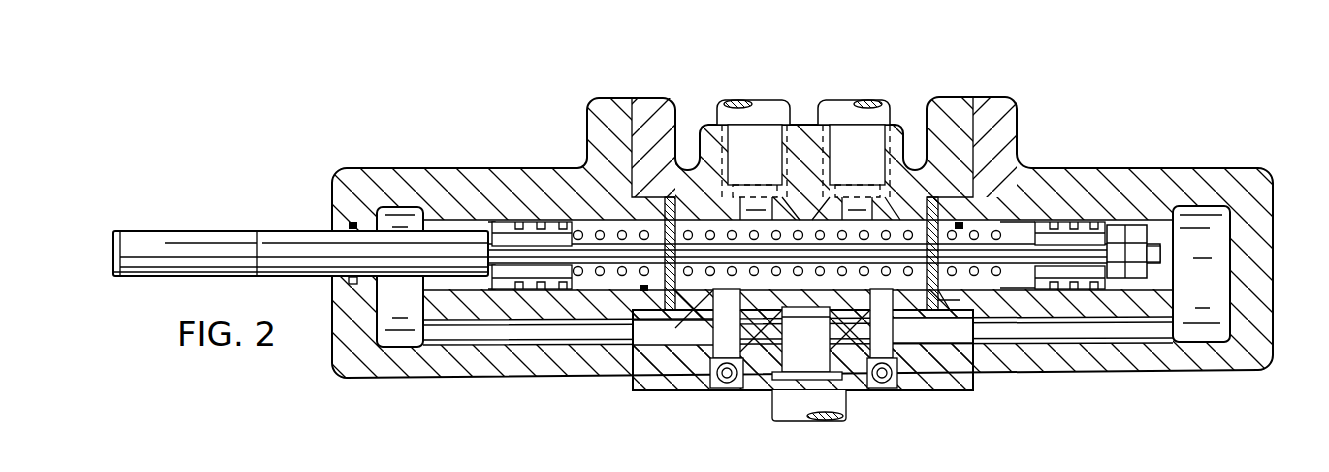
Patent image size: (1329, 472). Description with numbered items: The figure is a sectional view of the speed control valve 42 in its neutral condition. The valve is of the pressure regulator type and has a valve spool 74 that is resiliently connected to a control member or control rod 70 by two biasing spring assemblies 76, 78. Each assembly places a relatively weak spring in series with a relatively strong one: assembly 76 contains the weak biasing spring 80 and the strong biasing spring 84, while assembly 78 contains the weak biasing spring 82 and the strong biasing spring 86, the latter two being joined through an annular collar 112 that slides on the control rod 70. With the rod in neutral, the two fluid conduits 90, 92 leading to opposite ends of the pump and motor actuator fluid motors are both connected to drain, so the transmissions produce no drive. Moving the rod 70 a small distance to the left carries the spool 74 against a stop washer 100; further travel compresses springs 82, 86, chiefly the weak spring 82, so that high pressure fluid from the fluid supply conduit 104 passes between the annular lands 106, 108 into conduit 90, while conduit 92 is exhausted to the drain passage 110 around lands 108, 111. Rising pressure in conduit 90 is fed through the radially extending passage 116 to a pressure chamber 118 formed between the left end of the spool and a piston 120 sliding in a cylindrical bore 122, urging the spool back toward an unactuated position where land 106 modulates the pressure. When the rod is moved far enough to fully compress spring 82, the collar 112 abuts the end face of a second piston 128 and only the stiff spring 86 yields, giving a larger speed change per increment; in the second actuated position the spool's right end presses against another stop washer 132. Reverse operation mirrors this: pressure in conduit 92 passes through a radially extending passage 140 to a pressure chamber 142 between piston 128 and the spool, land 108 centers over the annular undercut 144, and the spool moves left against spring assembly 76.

The speed control valve 42 is at (1224, 120).
The control rod 70 is at (278, 231).
The valve spool 74 is at (960, 178).
The biasing spring assembly 76 is at (580, 215).
The biasing spring assembly 78 is at (1025, 215).
The biasing spring 80 is at (560, 286).
The biasing spring 82 is at (1098, 284).
The biasing spring 84 is at (635, 288).
The biasing spring 86 is at (878, 330).
The fluid conduit 90 is at (756, 103).
The fluid conduit 92 is at (864, 102).
The stop washer 100 is at (686, 312).
The fluid supply conduit 104 is at (808, 418).
The annular land 106 is at (780, 176).
The annular land 108 is at (872, 216).
The drain passage 110 is at (1150, 334).
The land 111 is at (896, 316).
The collar 112 is at (1012, 283).
The radially extending passage 116 is at (756, 212).
The pressure chamber 118 is at (590, 290).
The piston 120 is at (750, 214).
The cylindrical bore 122 is at (442, 222).
The piston 128 is at (1095, 230).
The stop washer 132 is at (1000, 217).
The radially extending passage 140 is at (807, 343).
The pressure chamber 142 is at (950, 290).
The annular undercut 144 is at (856, 215).